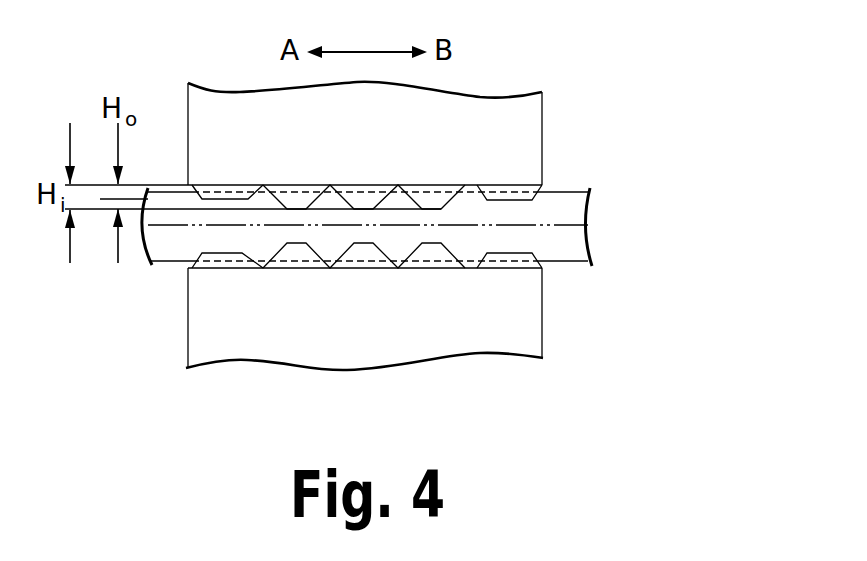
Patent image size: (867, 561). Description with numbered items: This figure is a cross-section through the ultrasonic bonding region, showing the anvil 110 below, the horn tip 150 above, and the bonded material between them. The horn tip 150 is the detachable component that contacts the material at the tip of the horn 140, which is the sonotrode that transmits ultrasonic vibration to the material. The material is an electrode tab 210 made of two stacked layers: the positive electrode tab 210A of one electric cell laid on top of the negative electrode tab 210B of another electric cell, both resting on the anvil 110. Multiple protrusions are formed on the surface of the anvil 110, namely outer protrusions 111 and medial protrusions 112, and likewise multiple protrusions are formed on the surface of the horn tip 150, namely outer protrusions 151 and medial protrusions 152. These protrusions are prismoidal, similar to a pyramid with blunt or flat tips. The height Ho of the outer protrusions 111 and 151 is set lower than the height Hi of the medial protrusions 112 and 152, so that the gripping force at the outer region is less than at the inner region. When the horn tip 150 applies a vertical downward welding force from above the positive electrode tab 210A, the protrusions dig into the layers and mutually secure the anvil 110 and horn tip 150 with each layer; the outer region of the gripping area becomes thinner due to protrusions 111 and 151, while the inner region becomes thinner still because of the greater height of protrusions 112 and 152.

The anvil 110 is at (389, 350).
The outer protrusions of anvil 111 is at (218, 264).
The medial protrusions of anvil 112 is at (437, 262).
The horn 140 is at (562, 91).
The horn tip 150 is at (468, 111).
The outer protrusions of horn tip 151 is at (218, 187).
The medial protrusions of horn tip 152 is at (437, 192).
The electrode tab 210 is at (704, 185).
The positive electrode tab 210A is at (573, 207).
The negative electrode tab 210B is at (573, 242).